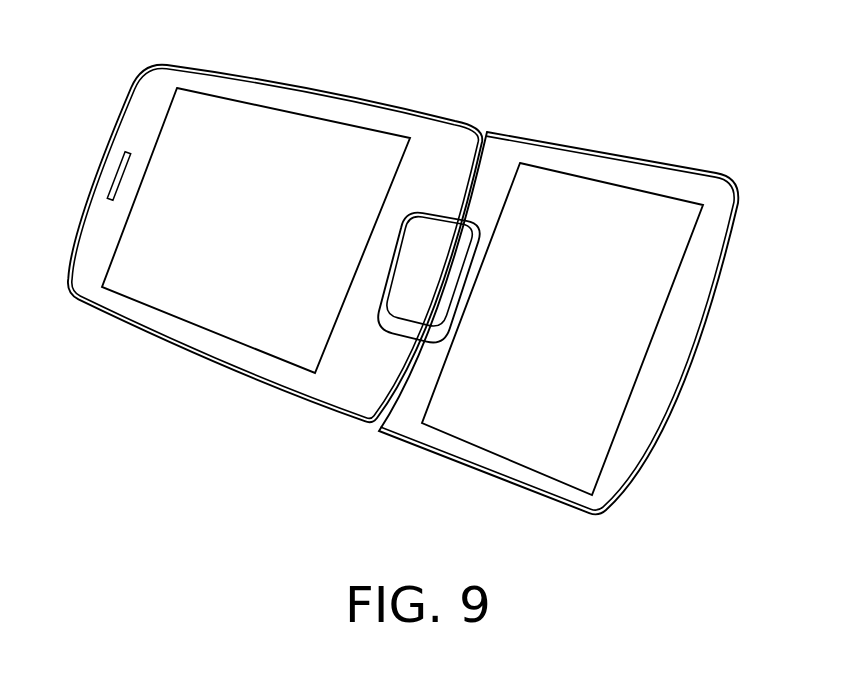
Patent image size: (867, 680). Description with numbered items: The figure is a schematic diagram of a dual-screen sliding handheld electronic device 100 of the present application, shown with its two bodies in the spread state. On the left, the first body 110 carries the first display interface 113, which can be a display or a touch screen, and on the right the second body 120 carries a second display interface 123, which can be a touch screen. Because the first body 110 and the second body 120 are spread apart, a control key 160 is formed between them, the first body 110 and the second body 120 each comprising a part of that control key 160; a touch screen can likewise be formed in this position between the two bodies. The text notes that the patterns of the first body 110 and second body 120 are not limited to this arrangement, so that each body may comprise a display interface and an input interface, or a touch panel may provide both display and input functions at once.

The portable electronic device 100 is at (403, 278).
The first body 110 is at (275, 216).
The first display interface 113 is at (207, 290).
The second body 120 is at (558, 309).
The second display interface 123 is at (513, 415).
The control key 160 is at (402, 312).